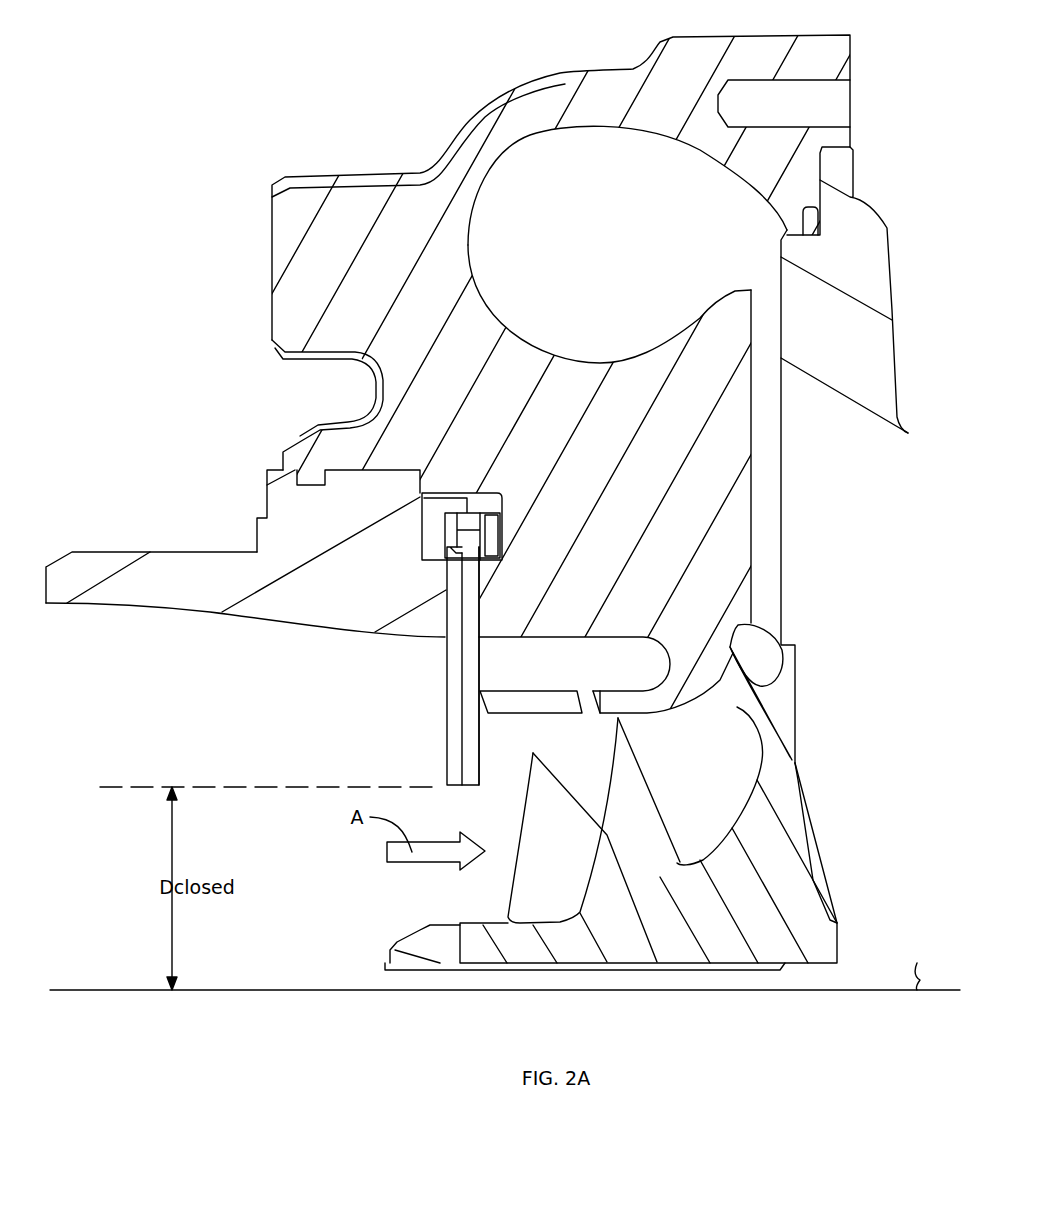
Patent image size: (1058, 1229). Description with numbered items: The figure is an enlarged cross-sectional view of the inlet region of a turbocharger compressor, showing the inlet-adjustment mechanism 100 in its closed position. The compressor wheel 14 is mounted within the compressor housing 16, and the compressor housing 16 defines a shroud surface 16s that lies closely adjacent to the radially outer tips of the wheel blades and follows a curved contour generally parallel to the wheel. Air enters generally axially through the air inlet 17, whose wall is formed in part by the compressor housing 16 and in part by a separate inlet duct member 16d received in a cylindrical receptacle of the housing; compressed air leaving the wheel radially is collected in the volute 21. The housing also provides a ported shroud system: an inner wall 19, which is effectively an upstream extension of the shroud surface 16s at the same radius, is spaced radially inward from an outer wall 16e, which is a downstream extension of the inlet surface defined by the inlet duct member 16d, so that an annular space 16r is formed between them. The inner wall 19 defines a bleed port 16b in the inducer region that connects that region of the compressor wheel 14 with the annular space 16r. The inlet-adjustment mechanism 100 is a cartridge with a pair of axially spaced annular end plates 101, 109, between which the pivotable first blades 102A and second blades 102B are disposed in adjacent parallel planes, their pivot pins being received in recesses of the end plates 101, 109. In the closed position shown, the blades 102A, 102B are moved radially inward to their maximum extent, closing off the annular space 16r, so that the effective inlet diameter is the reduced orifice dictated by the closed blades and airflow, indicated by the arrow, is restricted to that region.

The compressor wheel 14 is at (738, 857).
The compressor housing 16 is at (318, 257).
The bleed port 16b is at (585, 697).
The inlet duct member 16d is at (215, 573).
The outer wall 16e is at (612, 660).
The annular space 16r is at (538, 667).
The shroud surface 16s is at (790, 700).
The air inlet 17 is at (210, 612).
The inner wall 19 is at (507, 703).
The volute 21 is at (573, 187).
The inlet-adjustment mechanism 100 is at (405, 622).
The end plate 101 is at (433, 513).
The first blades 102A is at (446, 752).
The second blades 102B is at (470, 773).
The end plate 109 is at (492, 530).